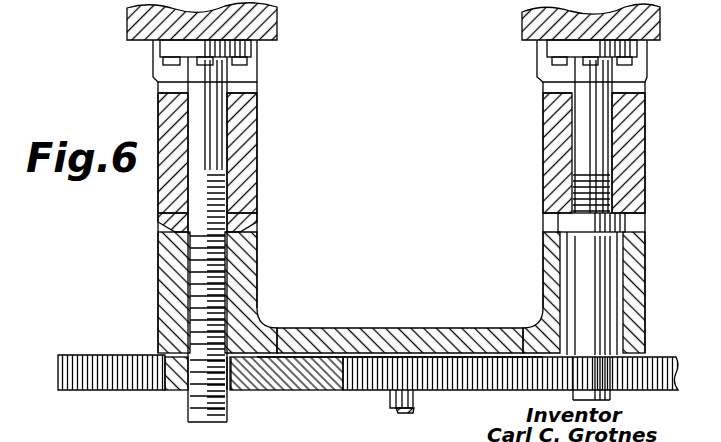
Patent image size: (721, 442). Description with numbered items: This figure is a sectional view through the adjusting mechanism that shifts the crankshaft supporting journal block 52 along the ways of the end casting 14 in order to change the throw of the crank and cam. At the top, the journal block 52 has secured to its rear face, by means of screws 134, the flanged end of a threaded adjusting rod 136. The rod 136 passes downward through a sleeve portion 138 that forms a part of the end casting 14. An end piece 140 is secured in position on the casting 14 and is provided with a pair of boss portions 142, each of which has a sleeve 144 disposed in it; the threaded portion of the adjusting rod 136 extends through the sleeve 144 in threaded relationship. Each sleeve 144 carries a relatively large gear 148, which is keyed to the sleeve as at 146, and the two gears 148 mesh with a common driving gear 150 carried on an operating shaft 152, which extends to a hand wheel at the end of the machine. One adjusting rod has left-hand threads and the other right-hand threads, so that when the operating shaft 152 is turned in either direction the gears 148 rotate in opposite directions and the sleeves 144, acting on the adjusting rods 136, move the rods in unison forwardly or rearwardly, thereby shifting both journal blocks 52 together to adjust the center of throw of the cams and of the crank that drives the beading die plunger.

The end casting 14 is at (238, 231).
The journal block 52 is at (277, 25).
The screws 134 is at (245, 64).
The threaded adjusting rod 136 is at (215, 127).
The sleeve portion 138 is at (257, 172).
The end piece 140 is at (293, 332).
The boss portion 142 is at (237, 276).
The sleeve 144 is at (232, 237).
The key 146 is at (238, 393).
The gear 148 is at (293, 388).
The driving gear 150 is at (428, 392).
The operating shaft 152 is at (390, 407).